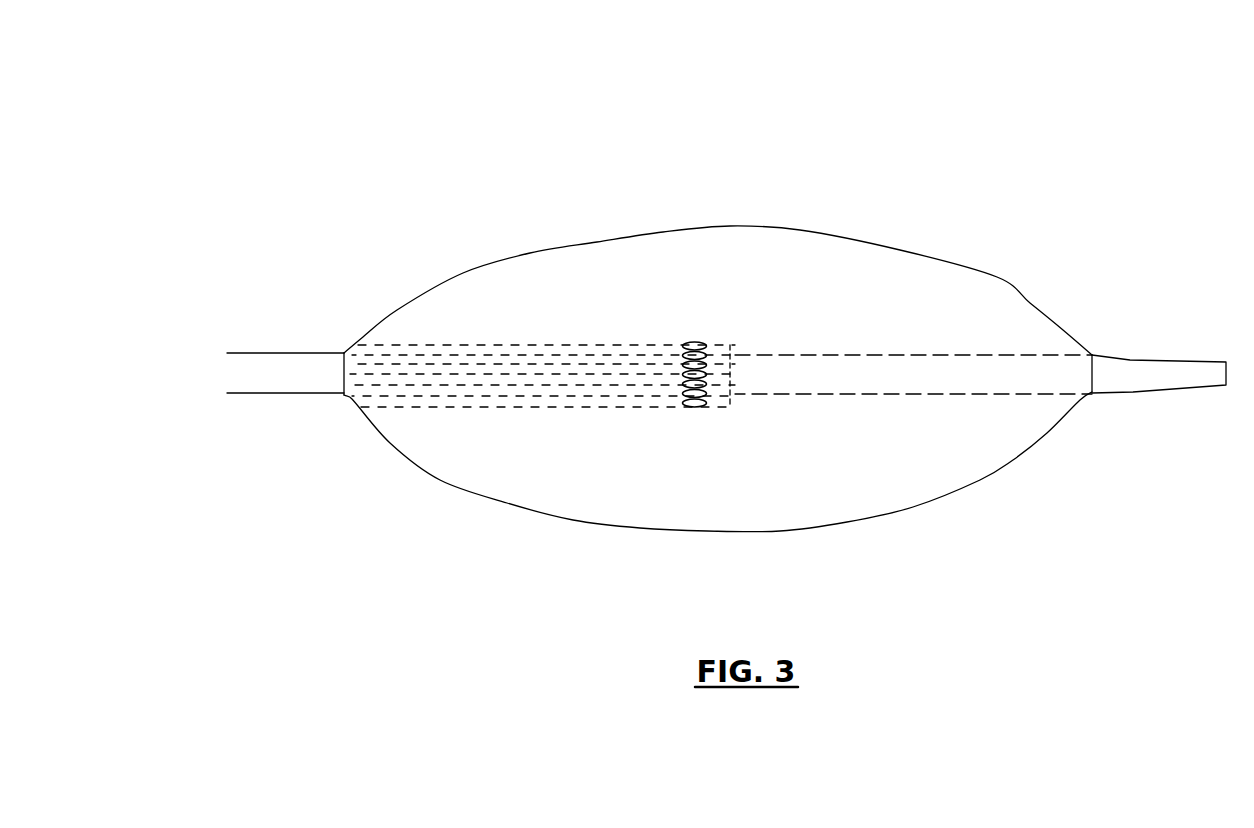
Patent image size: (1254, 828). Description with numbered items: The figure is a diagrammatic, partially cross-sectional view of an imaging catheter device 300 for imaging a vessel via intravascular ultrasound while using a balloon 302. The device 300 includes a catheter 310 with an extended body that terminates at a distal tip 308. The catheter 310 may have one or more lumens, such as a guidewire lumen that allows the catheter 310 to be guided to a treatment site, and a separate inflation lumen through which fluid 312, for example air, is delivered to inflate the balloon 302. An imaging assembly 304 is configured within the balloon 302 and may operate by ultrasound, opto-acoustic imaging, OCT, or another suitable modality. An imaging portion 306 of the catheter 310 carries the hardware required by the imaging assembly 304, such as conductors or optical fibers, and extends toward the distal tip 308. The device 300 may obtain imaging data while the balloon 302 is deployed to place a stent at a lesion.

The imaging catheter device 300 is at (1000, 106).
The balloon 302 is at (1022, 296).
The imaging assembly 304 is at (702, 408).
The imaging portion 306 is at (467, 408).
The distal tip 308 is at (1118, 393).
The catheter 310 is at (838, 355).
The fluid 312 is at (718, 339).